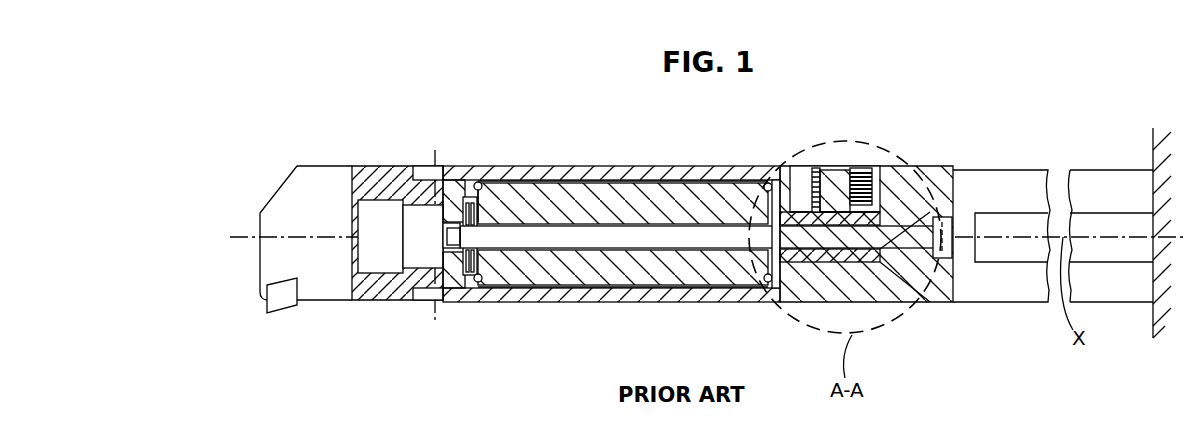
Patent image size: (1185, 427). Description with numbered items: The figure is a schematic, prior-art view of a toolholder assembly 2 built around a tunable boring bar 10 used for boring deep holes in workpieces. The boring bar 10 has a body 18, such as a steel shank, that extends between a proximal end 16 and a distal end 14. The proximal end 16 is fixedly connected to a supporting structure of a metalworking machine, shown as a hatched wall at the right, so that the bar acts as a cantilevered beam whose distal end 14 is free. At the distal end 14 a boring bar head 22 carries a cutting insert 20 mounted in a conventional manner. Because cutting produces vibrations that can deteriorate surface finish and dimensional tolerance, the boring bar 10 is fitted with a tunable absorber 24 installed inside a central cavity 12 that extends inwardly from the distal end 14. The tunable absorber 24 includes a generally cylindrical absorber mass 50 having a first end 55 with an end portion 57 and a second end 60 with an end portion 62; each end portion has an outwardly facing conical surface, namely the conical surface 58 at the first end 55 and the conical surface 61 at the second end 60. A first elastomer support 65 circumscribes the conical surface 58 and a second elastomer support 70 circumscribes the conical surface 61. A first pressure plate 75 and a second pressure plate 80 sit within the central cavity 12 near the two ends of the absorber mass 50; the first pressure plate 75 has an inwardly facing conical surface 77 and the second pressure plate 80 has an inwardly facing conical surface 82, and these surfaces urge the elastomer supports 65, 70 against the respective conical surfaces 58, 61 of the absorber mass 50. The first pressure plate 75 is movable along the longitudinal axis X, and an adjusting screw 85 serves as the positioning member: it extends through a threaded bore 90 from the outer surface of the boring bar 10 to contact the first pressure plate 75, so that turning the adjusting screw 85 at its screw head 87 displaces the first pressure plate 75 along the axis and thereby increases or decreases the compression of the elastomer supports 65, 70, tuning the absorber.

The toolholder assembly 2 is at (665, 145).
The boring bar 10 is at (555, 313).
The central cavity 12 is at (657, 288).
The distal end 14 is at (348, 190).
The proximal end 16 is at (955, 192).
The body 18 is at (622, 166).
The cutting insert 20 is at (283, 305).
The boring bar head 22 is at (298, 262).
The tunable absorber 24 is at (583, 300).
The absorber mass 50 is at (665, 200).
The first end 55 is at (710, 283).
The end portion 57 is at (812, 176).
The outwardly facing conical surface 58 is at (765, 184).
The second end 60 is at (575, 166).
The outwardly facing conical surface 61 is at (487, 182).
The end portion 62 is at (465, 268).
The first elastomer support 65 is at (795, 187).
The second elastomer support 70 is at (476, 180).
The first pressure plate 75 is at (855, 180).
The inwardly facing conical surface 77 is at (805, 300).
The second pressure plate 80 is at (450, 207).
The inwardly facing conical surface 82 is at (498, 290).
The adjusting screw 85 is at (880, 302).
The screw head 87 is at (907, 300).
The bore 90 is at (955, 290).